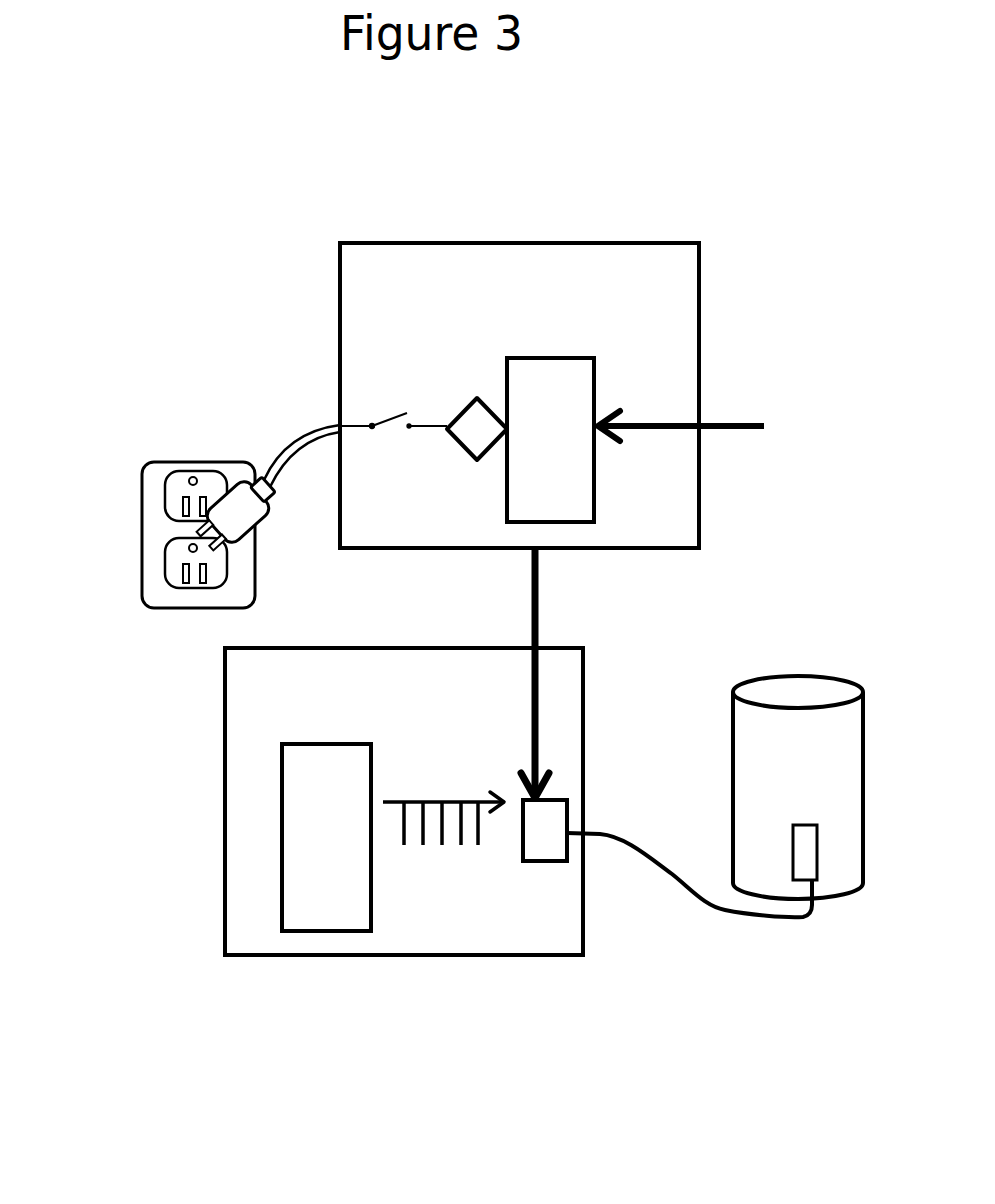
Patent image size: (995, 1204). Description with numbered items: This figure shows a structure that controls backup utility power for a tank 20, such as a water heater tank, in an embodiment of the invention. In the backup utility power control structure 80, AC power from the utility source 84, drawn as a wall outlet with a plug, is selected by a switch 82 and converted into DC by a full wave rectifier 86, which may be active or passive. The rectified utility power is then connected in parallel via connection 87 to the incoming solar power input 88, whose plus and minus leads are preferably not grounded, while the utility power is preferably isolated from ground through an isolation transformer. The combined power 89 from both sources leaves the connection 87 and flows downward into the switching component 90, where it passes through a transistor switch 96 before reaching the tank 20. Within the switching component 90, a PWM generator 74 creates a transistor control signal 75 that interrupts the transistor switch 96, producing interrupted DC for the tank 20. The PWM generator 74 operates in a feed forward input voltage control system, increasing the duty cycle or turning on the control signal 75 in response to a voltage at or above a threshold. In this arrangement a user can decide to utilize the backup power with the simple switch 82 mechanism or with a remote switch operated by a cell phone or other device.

The tank 20 is at (793, 692).
The PWM generator 74 is at (313, 835).
The transistor control signal 75 is at (444, 864).
The backup utility power control structure 80 is at (530, 212).
The switch 82 is at (388, 413).
The AC power source 84 is at (157, 522).
The full wave rectifier 86 is at (472, 418).
The connection 87 is at (568, 397).
The solar power input 88 is at (703, 429).
The combined power 89 is at (540, 598).
The switching component 90 is at (184, 776).
The transistor switch 96 is at (545, 850).